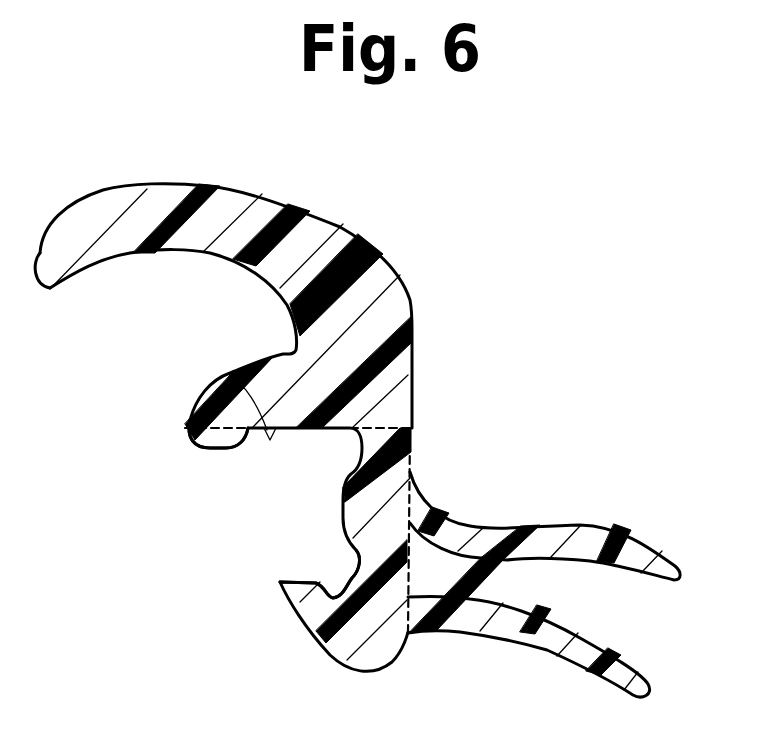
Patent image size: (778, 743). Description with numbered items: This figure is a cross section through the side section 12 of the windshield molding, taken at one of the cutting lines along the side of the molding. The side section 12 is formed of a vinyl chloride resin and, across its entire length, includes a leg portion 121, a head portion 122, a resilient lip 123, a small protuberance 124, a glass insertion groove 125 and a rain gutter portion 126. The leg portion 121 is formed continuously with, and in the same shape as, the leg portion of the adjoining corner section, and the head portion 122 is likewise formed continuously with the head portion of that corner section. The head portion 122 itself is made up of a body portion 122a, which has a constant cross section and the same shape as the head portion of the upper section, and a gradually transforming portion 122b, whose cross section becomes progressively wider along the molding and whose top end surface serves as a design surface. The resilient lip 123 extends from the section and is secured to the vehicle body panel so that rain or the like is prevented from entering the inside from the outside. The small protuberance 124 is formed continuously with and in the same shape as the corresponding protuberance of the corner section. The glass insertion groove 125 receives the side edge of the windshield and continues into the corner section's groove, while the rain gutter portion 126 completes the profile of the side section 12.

The side section 12 is at (418, 262).
The leg portion 121 is at (353, 527).
The head portion 122 is at (383, 318).
The body portion 122a is at (382, 378).
The gradually transforming portion 122b is at (337, 250).
The resilient lip 123 is at (493, 537).
The small protuberance 124 is at (205, 440).
The glass insertion groove 125 is at (233, 377).
The rain gutter portion 126 is at (208, 258).